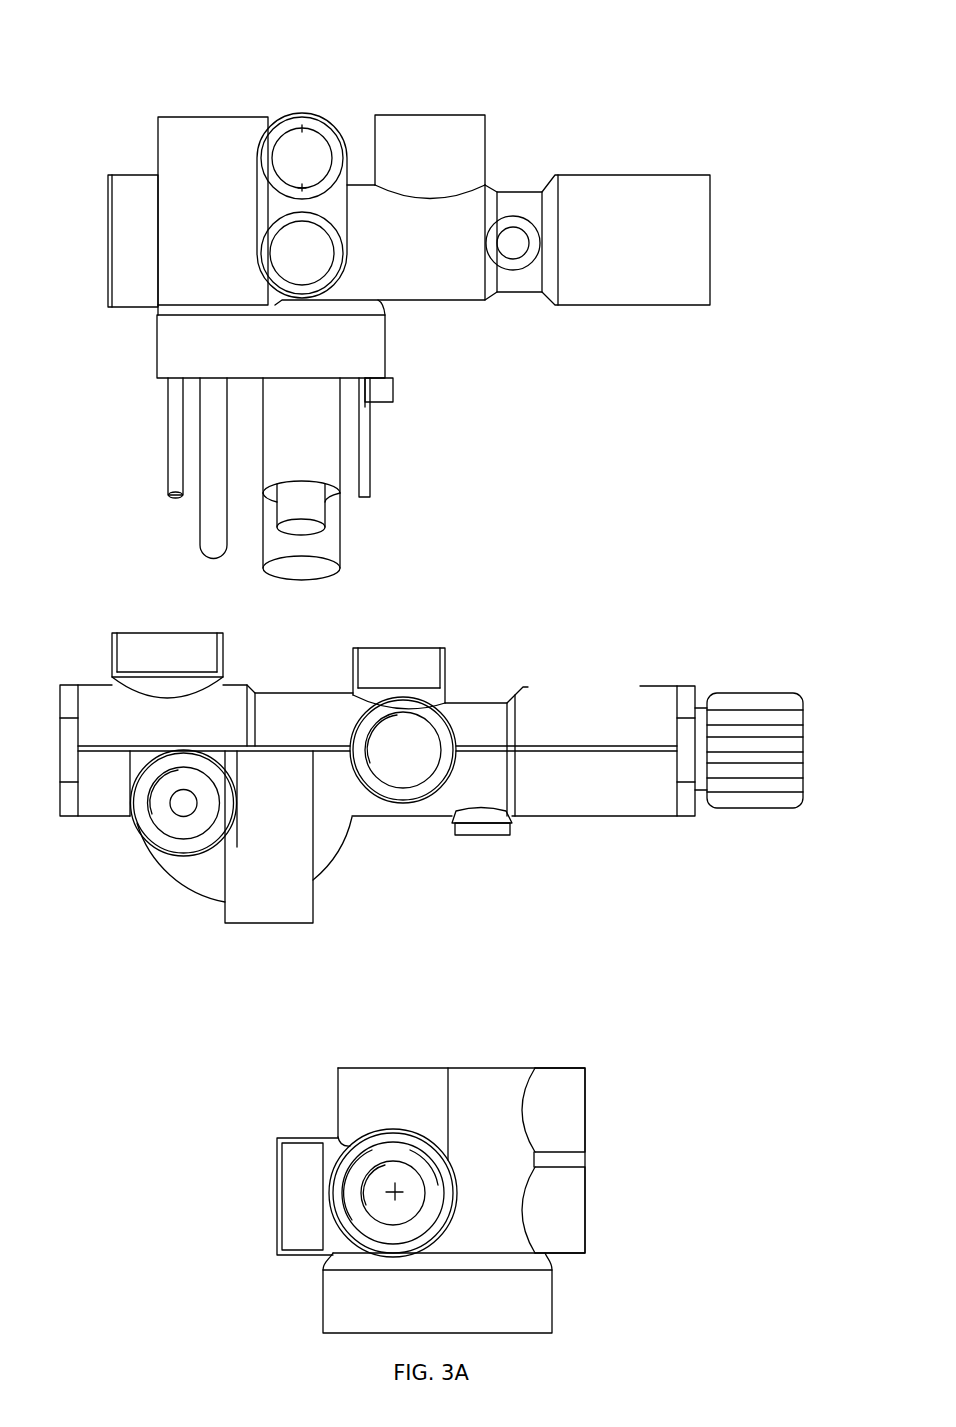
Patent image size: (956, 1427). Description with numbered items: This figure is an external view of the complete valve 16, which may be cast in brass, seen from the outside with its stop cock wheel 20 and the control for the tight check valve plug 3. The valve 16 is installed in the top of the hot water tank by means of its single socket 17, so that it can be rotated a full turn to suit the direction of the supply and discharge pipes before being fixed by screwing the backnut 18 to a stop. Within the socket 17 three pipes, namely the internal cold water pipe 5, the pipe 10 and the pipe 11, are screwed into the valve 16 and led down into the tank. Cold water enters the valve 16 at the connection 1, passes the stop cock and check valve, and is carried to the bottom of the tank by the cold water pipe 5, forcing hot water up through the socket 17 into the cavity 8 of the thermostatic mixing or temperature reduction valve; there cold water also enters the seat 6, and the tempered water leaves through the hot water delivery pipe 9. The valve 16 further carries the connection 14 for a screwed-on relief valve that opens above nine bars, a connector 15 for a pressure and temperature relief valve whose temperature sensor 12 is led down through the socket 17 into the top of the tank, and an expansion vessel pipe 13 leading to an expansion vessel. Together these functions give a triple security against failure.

The cold water connection 1 is at (590, 616).
The check valve control plug 3 is at (493, 832).
The internal cold water pipe 5 is at (340, 505).
The seat 6 is at (393, 1220).
The cavity 8 is at (393, 1193).
The hot water delivery pipe 9 is at (167, 607).
The pipe 10 is at (624, 1108).
The pipe 11 is at (440, 457).
The temperature sensor 12 is at (200, 524).
The expansion vessel pipe 13 is at (399, 648).
The relief valve connection 14 is at (431, 116).
The connector 15 is at (209, 117).
The valve 16 is at (387, 345).
The socket 17 is at (370, 428).
The backnut 18 is at (393, 388).
The stop cock wheel 20 is at (738, 693).